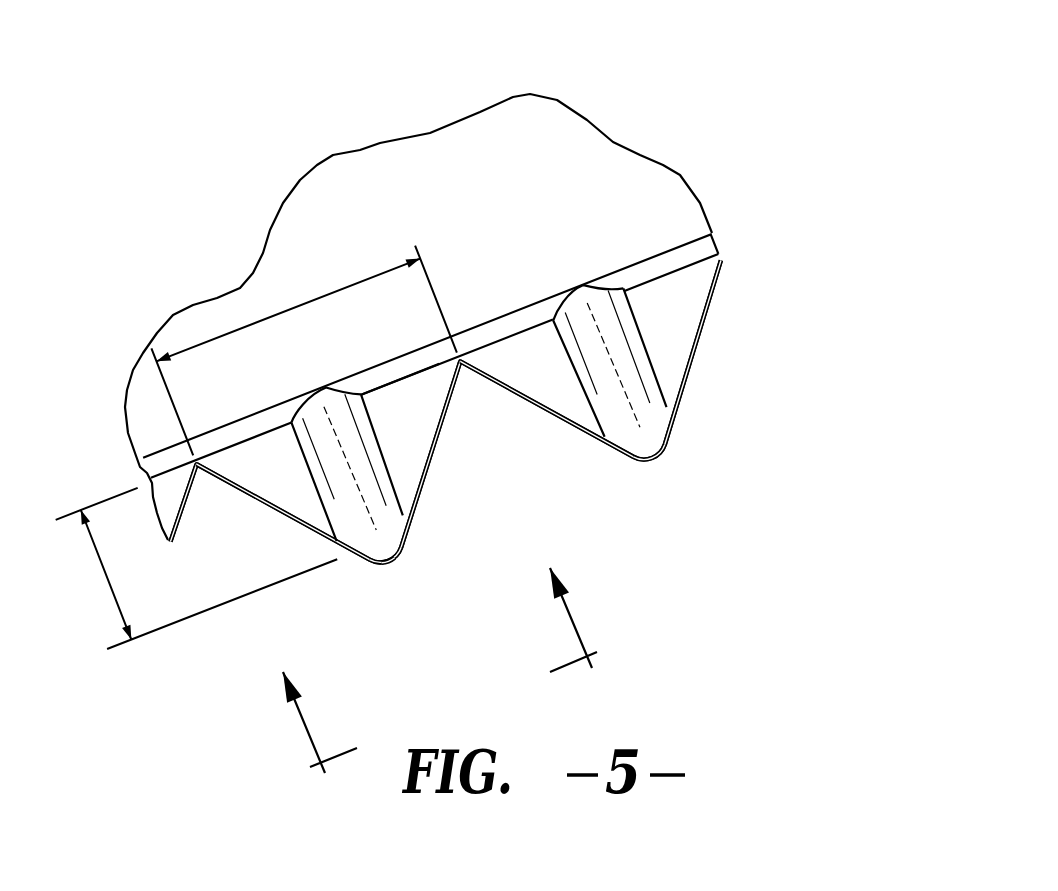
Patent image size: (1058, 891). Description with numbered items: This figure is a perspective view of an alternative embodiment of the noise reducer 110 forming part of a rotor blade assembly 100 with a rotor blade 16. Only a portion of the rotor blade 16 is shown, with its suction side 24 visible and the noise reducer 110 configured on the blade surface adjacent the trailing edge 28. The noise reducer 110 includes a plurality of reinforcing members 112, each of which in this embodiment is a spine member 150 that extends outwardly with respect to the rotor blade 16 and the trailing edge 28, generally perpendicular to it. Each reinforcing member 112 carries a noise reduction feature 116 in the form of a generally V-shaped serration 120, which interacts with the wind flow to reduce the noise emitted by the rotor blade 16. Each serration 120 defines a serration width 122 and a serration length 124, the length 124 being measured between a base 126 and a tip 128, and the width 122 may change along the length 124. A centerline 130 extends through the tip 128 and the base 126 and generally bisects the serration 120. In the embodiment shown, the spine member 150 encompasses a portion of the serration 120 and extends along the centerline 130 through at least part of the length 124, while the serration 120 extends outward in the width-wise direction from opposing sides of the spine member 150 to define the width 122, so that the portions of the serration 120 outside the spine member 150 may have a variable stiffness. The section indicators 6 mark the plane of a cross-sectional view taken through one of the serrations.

The section line 6- 6 is at (419, 659).
The rotor blade 16 is at (582, 90).
The suction side 24 is at (615, 170).
The trailing edge 28 is at (703, 242).
The rotor blade assembly 100 is at (735, 108).
The noise reducer 110 is at (743, 282).
The reinforcing member 112 is at (655, 337).
The noise reduction feature 116 is at (448, 440).
The serration 120 is at (563, 388).
The serration width 122 is at (237, 327).
The serration length 124 is at (100, 567).
The base 126 is at (393, 375).
The tip 128 is at (365, 561).
The centerline 130 is at (617, 370).
The spine member 150 is at (643, 400).